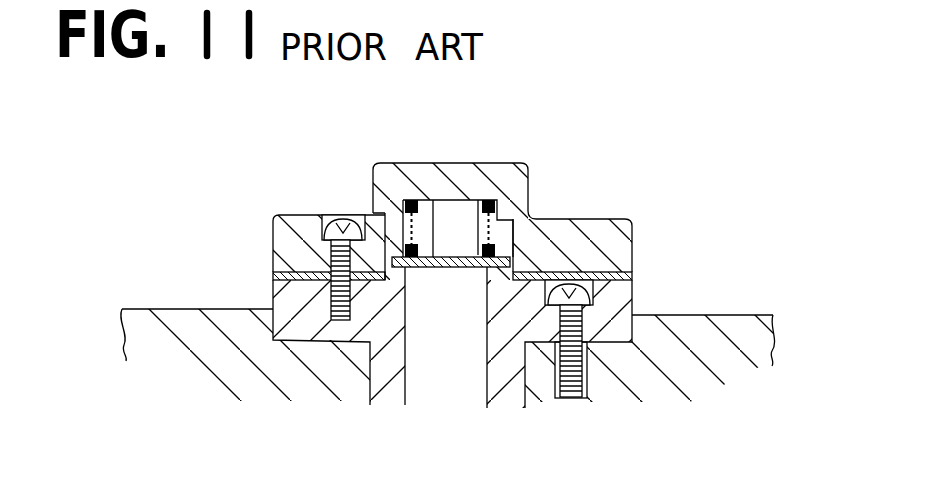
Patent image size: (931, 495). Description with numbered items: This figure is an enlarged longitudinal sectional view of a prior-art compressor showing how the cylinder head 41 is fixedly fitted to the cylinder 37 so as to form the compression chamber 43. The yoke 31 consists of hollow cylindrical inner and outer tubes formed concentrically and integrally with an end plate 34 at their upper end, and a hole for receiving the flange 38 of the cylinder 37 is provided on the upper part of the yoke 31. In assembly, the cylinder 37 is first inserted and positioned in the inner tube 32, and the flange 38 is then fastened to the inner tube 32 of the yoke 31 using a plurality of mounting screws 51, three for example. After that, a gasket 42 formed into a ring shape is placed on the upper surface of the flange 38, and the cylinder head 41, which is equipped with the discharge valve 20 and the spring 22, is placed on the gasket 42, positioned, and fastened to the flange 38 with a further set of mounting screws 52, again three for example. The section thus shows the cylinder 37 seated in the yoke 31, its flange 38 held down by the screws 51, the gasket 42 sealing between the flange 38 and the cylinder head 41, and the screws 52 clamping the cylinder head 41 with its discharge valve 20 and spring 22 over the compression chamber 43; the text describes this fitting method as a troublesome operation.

The discharge valve 20 is at (505, 180).
The spring 22 is at (535, 207).
The yoke 31 is at (440, 314).
The end plate 34 is at (227, 332).
The inner tube 32 is at (543, 373).
The cylinder 37 is at (383, 362).
The flange 38 is at (287, 313).
The cylinder head 41 is at (457, 227).
The gasket 42 is at (612, 266).
The compression chamber 43 is at (488, 232).
The mounting screws 51 is at (582, 330).
The mounting screws 52 is at (333, 223).